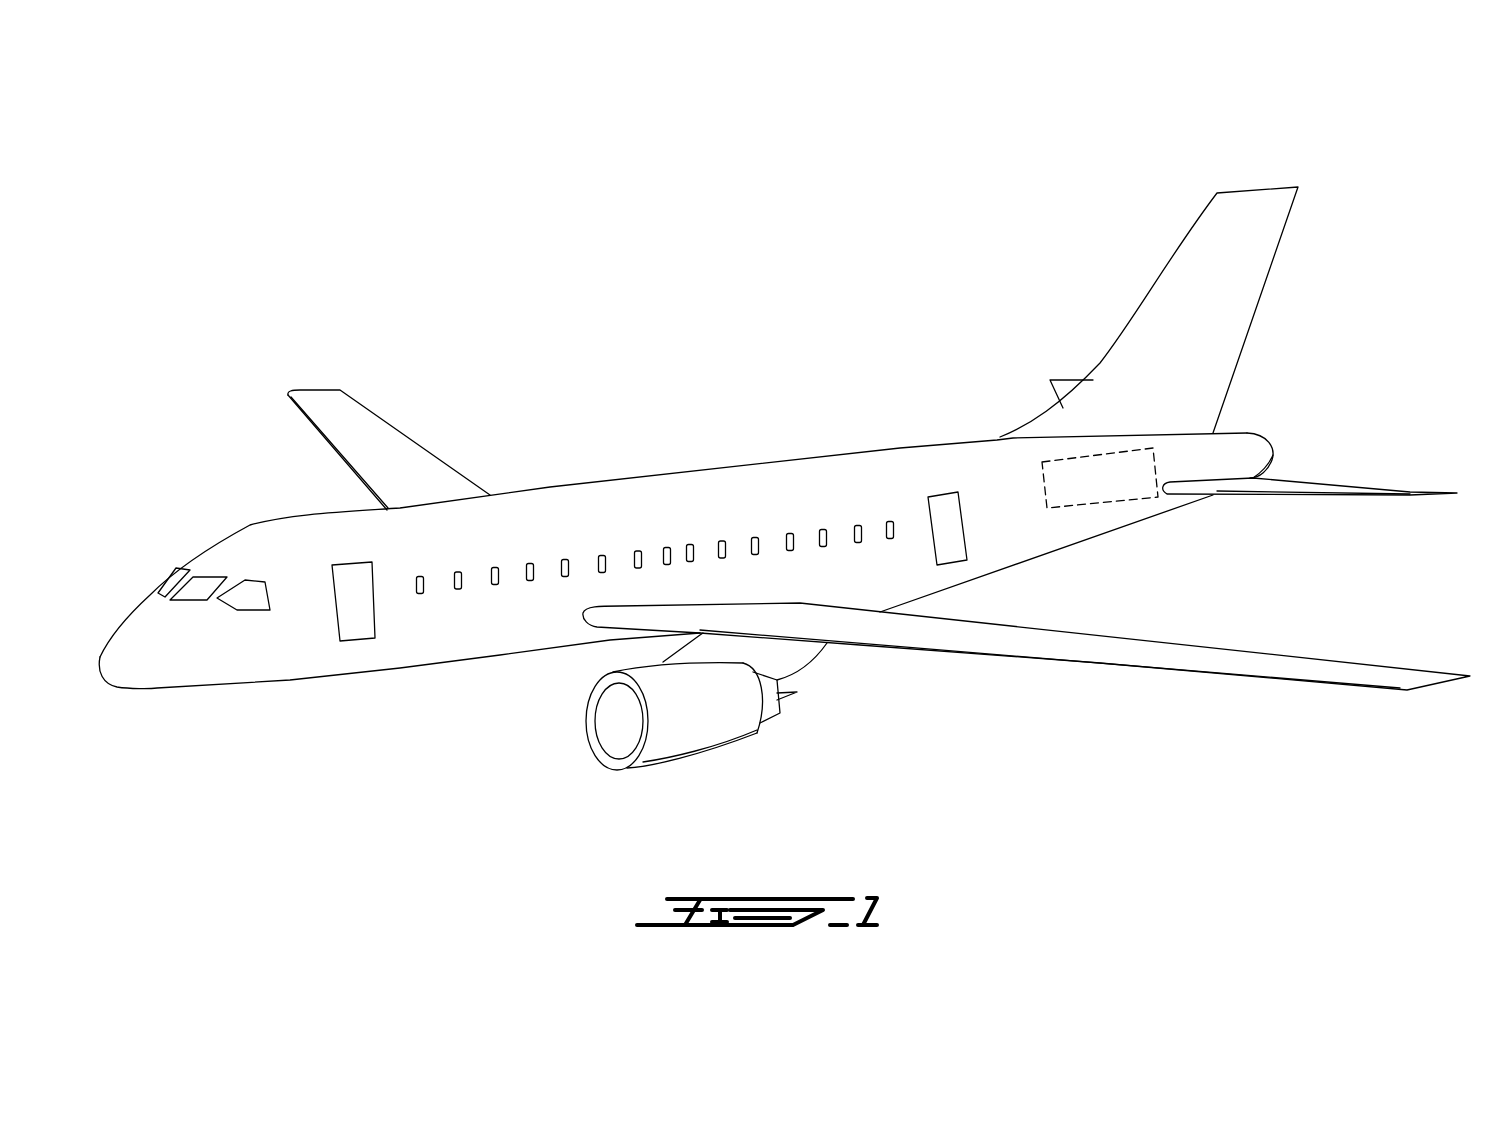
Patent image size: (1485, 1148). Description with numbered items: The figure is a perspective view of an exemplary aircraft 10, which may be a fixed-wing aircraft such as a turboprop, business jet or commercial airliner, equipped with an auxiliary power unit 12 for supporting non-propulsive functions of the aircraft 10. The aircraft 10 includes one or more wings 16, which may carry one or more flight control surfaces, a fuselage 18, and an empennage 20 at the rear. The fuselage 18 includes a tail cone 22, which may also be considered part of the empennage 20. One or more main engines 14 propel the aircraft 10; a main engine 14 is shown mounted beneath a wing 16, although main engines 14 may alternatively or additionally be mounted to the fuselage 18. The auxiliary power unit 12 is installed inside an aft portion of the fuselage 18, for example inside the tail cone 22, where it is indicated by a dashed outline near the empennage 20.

The aircraft 10 is at (466, 194).
The auxiliary power unit 12 is at (1083, 507).
The main engine 14 is at (667, 742).
The wing 16 is at (358, 430).
The fuselage 18 is at (445, 628).
The empennage 20 is at (1107, 296).
The tail cone 22 is at (1160, 507).